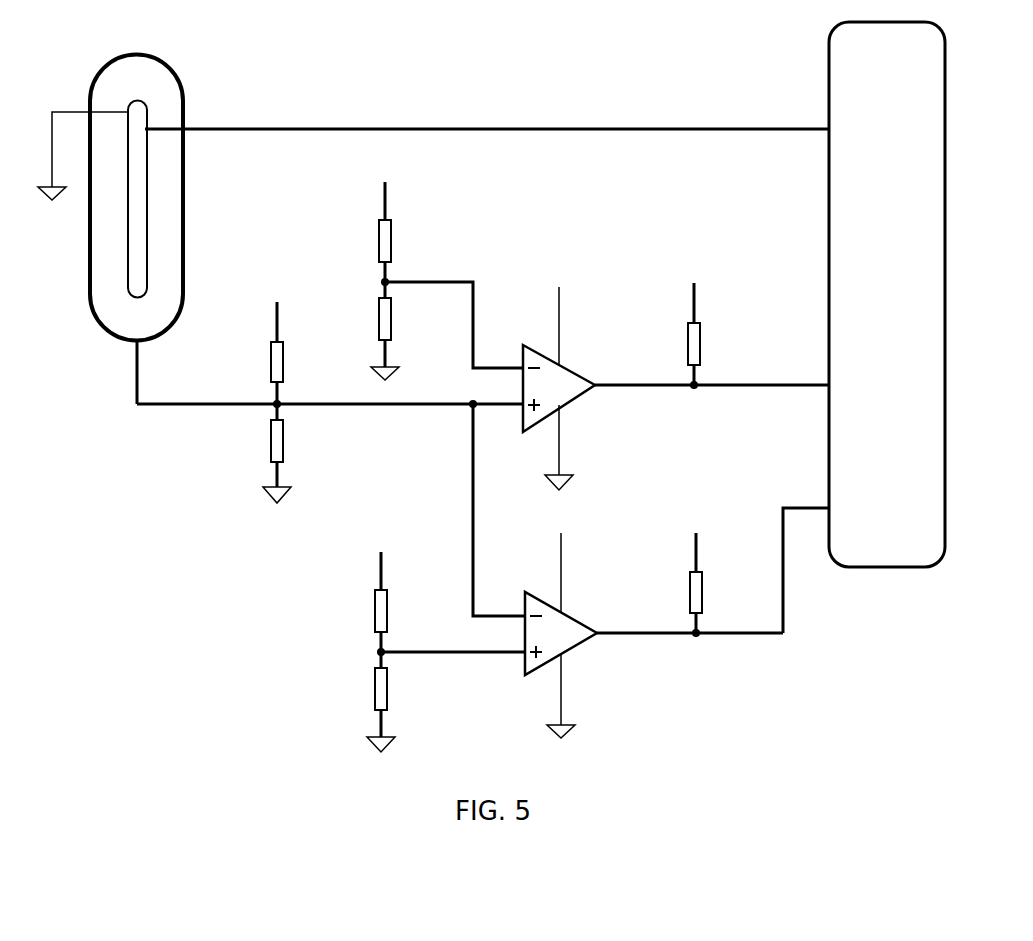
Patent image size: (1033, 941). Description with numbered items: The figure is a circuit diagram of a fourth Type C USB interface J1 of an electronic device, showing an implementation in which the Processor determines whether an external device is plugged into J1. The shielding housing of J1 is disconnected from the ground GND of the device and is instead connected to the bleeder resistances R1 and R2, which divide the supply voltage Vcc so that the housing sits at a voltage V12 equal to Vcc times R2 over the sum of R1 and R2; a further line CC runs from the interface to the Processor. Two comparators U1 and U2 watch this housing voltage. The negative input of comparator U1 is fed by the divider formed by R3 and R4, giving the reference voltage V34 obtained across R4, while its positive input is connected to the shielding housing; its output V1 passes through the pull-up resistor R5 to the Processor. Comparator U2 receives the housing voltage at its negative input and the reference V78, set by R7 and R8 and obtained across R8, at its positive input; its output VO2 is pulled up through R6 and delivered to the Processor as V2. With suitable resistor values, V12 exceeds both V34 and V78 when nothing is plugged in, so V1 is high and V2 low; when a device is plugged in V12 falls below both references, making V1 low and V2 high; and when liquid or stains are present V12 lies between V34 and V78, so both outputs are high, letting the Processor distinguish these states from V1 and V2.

The Type C USB interface J1 is at (145, 224).
The ground GND is at (79, 168).
The control connection line to processor CC is at (487, 113).
The processor Processor is at (887, 294).
The bleeder resistance R1 is at (267, 338).
The bleeder resistance R2 is at (265, 453).
The divided voltage resistor R3 is at (374, 215).
The divided voltage resistor R4 is at (372, 331).
The pull-up resistor R5 is at (683, 320).
The pull-up resistor R6 is at (684, 563).
The divided voltage resistor R7 is at (371, 585).
The divided voltage resistor R8 is at (368, 702).
The comparator U1 is at (566, 373).
The comparator U2 is at (568, 621).
The voltage of the shielding housing V12 is at (331, 495).
The voltage value of the negative input end of comparator U1 V34 is at (452, 307).
The voltage value of the positive input end of comparator U2 V78 is at (451, 637).
The output of comparator U1 V1 is at (712, 372).
The output of comparator U2 V2 is at (801, 557).
The comparator U2 output VO2 is at (690, 621).